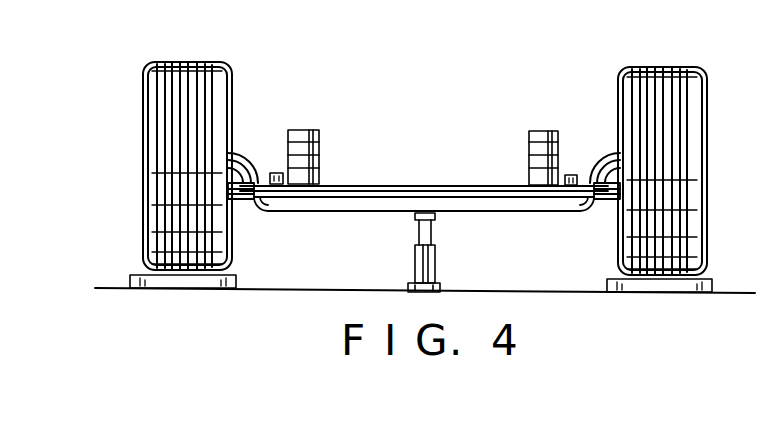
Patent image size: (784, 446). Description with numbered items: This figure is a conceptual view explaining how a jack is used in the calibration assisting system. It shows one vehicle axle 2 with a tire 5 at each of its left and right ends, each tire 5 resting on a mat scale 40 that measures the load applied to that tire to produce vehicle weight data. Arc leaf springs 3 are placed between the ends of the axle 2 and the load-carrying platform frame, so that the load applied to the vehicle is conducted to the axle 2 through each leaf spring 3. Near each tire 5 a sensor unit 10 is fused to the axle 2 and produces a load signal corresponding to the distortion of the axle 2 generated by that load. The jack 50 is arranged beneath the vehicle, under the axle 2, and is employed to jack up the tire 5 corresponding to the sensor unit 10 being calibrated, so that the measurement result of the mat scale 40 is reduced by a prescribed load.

The axle 2 is at (418, 186).
The arc leaf spring 3 is at (308, 130).
The tire 5 is at (143, 92).
The sensor unit 10 is at (269, 160).
The mat scale 40 is at (142, 275).
The jack 50 is at (436, 262).